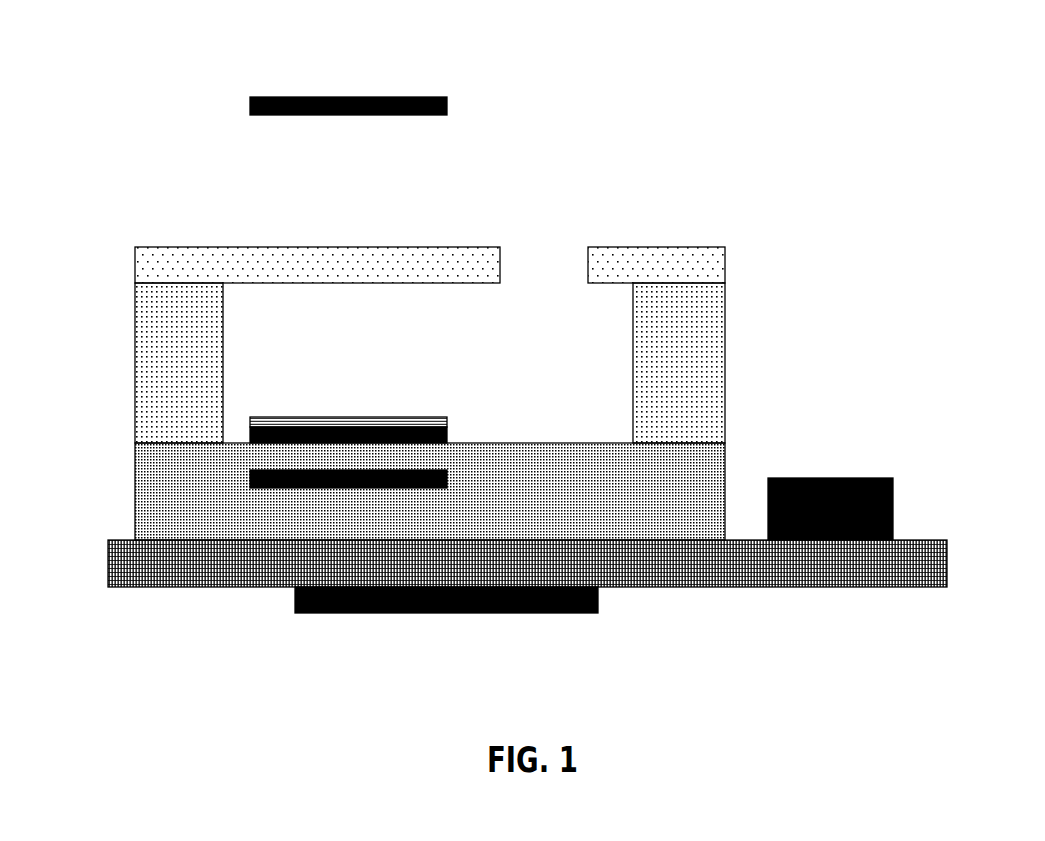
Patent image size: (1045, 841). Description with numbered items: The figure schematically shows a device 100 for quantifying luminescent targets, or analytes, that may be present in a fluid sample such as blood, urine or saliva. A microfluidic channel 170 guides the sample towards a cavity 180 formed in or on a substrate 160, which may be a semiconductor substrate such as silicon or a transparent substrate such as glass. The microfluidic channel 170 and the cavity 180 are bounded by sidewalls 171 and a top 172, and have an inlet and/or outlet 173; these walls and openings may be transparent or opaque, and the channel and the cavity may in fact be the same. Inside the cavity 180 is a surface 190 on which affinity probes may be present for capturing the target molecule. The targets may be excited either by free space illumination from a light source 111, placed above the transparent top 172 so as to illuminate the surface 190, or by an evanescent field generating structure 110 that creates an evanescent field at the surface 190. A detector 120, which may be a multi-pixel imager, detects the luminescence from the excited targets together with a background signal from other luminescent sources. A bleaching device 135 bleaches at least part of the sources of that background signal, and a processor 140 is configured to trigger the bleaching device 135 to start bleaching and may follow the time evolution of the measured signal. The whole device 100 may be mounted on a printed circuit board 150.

The device 100 is at (202, 79).
The evanescent field generating structure 110 is at (447, 430).
The light source 111 is at (448, 108).
The detector 120 is at (280, 488).
The bleaching device 135 is at (383, 613).
The processor 140 is at (873, 477).
The printed circuit board 150 is at (780, 555).
The substrate 160 is at (187, 493).
The microfluidic channel 170 is at (497, 264).
The sidewalls 171 is at (152, 327).
The top 172 is at (338, 263).
The inlet(s) and/or outlet(s) 173 is at (532, 268).
The cavity 180 is at (375, 340).
The surface 190 is at (447, 416).